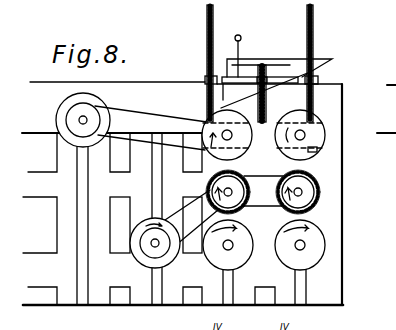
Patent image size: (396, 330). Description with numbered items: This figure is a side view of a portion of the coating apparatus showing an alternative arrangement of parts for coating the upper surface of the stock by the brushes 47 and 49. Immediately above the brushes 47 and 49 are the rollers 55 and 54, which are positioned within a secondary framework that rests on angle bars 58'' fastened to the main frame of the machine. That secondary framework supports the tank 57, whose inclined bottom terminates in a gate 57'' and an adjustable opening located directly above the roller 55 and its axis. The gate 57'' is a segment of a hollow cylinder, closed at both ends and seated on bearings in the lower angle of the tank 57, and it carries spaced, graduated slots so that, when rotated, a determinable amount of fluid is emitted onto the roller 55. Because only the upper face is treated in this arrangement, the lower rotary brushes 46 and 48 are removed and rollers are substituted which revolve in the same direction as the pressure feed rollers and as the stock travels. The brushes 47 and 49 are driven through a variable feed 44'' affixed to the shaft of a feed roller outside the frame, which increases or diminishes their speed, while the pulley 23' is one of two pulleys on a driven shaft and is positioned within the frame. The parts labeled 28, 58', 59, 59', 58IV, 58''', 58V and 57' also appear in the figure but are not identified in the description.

The pulley 28 is at (67, 120).
The pulley 23' is at (151, 122).
The pocketed roller 55 is at (233, 138).
The roller 54 is at (309, 156).
The shaft 58' is at (340, 127).
The pulley part 59 is at (342, 142).
The key 59' is at (341, 155).
The rack bars 58IV is at (213, 19).
The cross bar 58''' is at (270, 75).
The angle bars 58'' is at (201, 93).
The rack lower portion 58V is at (307, 102).
The tank 57 is at (279, 59).
The rack 57' is at (275, 92).
The gate 57'' is at (230, 55).
The variable feed 44'' is at (174, 234).
The brush 47 is at (243, 208).
The brush 49 is at (290, 195).
The rotary brush 46 is at (265, 249).
The rotary brush 48 is at (335, 254).